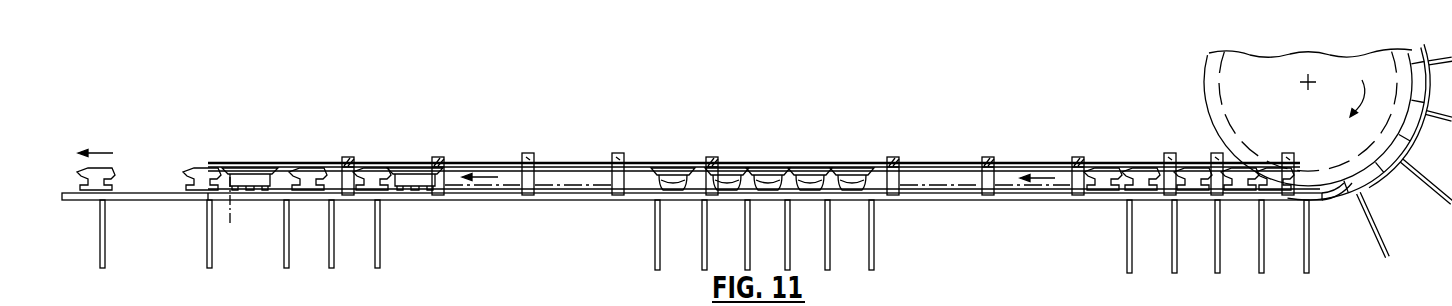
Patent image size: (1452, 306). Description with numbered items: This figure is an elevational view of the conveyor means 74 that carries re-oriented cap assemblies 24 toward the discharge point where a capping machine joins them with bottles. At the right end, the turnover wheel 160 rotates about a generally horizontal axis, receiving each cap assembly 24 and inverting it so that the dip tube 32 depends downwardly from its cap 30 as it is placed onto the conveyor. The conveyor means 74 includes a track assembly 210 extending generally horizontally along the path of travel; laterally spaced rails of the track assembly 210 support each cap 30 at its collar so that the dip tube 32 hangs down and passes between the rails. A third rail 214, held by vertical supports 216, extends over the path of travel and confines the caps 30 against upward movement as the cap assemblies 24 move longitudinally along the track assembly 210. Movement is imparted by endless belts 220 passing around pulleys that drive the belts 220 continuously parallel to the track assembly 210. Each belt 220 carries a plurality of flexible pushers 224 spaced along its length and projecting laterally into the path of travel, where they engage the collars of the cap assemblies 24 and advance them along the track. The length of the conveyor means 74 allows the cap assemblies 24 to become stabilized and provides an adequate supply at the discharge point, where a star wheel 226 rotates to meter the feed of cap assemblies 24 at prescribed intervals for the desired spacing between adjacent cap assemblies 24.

The cap assembly 24 is at (110, 168).
The cap 30 is at (1130, 168).
The dip tube 32 is at (1130, 233).
The conveyor means 74 is at (922, 156).
The turnover wheel 160 is at (1243, 82).
The track assembly 210 is at (570, 197).
The third rail 214 is at (482, 134).
The vertical supports 216 is at (610, 164).
The endless belts 220 is at (442, 190).
The pushers 224 is at (393, 190).
The star wheel 226 is at (242, 190).